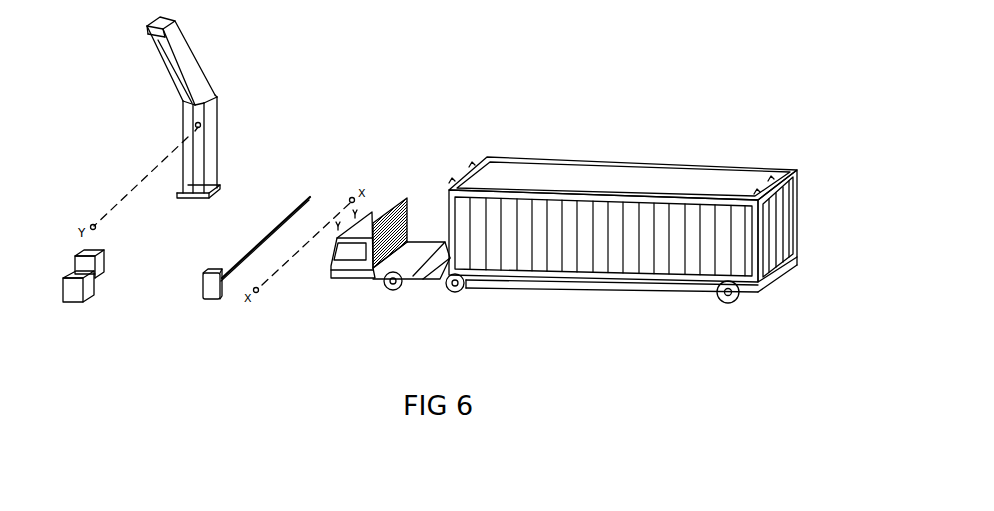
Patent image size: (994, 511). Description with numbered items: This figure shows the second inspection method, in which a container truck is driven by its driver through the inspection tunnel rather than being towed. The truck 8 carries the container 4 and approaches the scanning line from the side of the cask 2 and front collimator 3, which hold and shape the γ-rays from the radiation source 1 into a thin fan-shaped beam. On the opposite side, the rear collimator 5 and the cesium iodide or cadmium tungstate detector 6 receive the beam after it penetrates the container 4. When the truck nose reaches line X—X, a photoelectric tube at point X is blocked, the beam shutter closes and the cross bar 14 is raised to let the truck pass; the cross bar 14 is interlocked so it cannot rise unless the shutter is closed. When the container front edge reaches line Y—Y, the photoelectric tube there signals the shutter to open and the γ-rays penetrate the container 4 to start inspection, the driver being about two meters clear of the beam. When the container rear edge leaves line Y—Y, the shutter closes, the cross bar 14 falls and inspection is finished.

The radiation source 1 is at (204, 124).
The cask 2 is at (71, 294).
The front collimator 3 is at (101, 276).
The container 4 is at (623, 230).
The rear collimator 5 is at (148, 33).
The cesium iodide or cadmium tungstate detector 6 is at (179, 36).
The truck 8 is at (423, 247).
The cross bar 14 is at (210, 299).